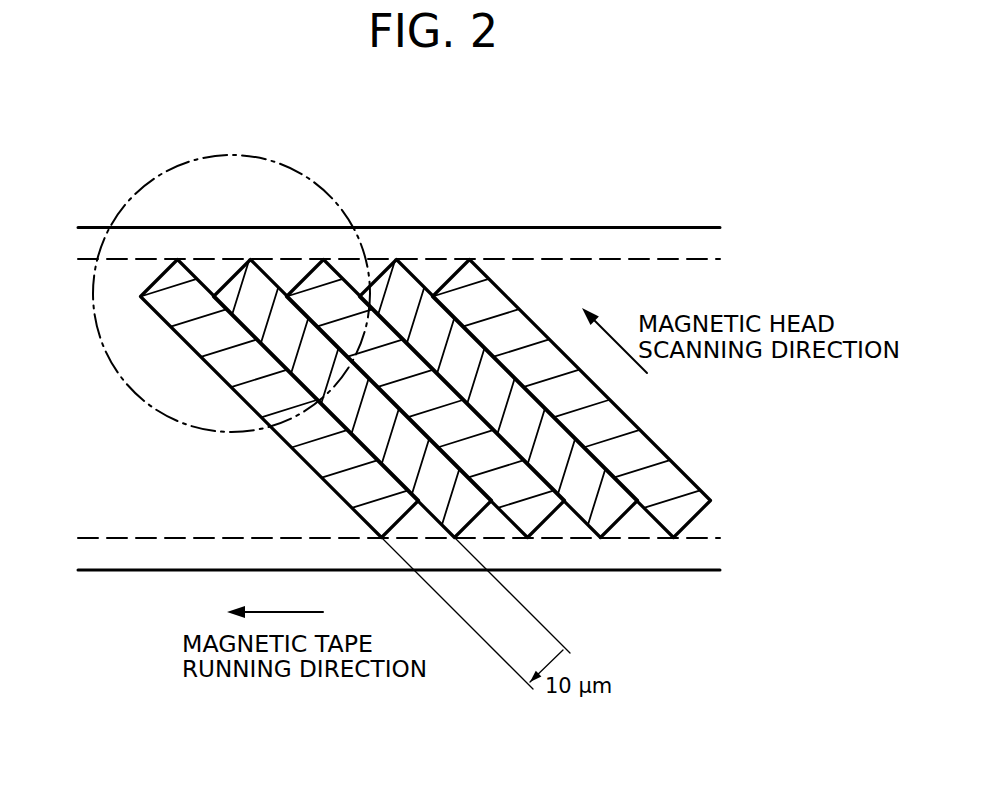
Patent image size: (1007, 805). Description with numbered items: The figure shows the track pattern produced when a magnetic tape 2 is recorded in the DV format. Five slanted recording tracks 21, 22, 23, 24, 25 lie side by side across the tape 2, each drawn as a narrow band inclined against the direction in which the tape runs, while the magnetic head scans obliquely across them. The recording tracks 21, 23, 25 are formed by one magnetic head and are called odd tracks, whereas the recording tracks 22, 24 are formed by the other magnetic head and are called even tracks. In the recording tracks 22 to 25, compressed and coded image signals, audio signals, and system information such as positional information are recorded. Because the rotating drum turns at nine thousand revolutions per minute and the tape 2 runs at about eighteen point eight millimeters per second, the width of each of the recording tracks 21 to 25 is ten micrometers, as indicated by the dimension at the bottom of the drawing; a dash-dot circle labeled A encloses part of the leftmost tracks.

The magnetic tape 2 is at (650, 245).
The recording track 21 is at (165, 262).
The recording track 22 is at (230, 277).
The recording track 23 is at (298, 277).
The recording track 24 is at (380, 277).
The recording track 25 is at (447, 277).
The enlarged region A is at (97, 330).